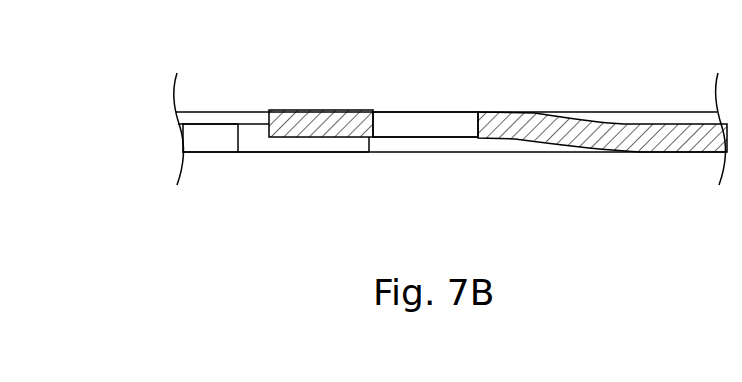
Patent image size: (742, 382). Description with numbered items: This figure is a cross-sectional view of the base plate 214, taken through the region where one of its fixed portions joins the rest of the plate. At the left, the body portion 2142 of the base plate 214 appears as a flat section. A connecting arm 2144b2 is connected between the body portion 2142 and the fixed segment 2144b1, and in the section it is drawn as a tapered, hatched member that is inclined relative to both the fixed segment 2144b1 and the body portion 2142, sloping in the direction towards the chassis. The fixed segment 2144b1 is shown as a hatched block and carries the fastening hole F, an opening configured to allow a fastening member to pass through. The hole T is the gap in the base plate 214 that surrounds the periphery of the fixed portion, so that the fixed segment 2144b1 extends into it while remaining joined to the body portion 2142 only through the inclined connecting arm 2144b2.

The base plate 214 is at (178, 44).
The body portion 2142 is at (188, 138).
The fixed segment 2144b1 is at (333, 110).
The connecting arm 2144b2 is at (622, 120).
The hole T is at (256, 150).
The fastening hole F is at (420, 140).